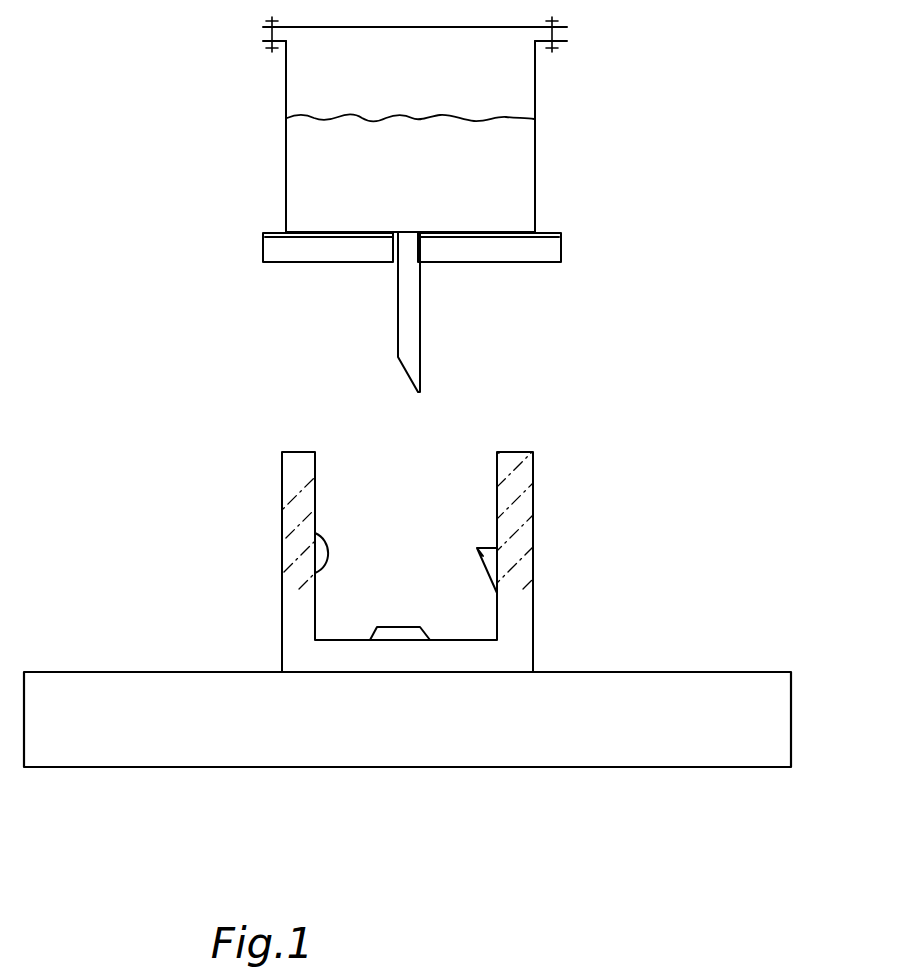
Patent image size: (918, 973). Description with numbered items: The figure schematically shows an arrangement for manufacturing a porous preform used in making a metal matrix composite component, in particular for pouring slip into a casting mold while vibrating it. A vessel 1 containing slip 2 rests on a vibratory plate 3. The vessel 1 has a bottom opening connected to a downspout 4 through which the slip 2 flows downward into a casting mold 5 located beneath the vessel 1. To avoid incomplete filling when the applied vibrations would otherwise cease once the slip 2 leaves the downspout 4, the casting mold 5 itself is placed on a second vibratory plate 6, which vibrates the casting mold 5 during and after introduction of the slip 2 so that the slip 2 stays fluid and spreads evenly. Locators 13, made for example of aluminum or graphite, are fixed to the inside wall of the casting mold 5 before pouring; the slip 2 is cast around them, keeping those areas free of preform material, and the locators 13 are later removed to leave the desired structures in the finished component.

The vessel 1 is at (537, 152).
The slip 2 is at (323, 173).
The vibratory plate 3 is at (548, 253).
The downspout 4 is at (405, 310).
The casting mold 5 is at (513, 505).
The vibratory plate 6 is at (791, 725).
The locators 13 is at (408, 633).